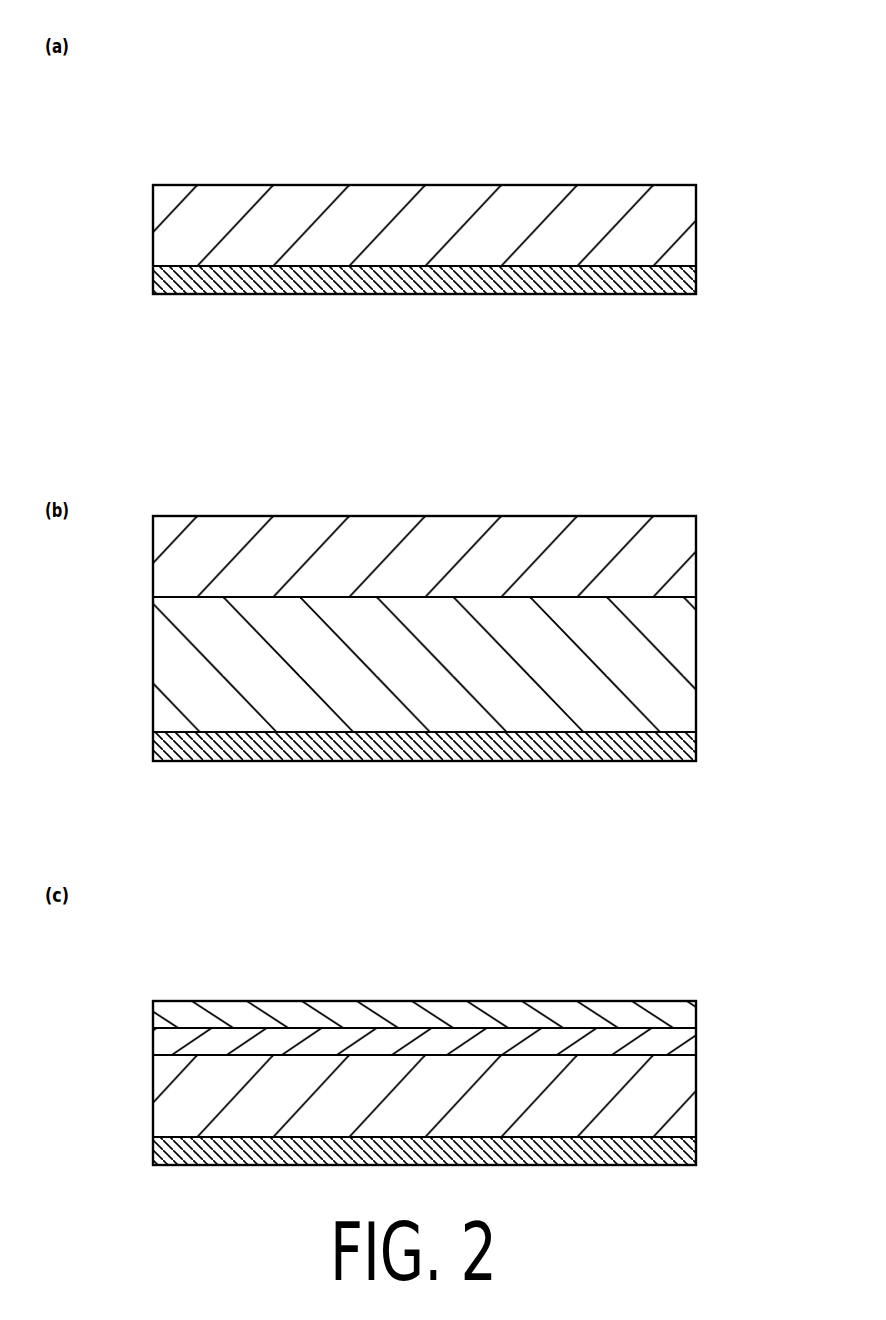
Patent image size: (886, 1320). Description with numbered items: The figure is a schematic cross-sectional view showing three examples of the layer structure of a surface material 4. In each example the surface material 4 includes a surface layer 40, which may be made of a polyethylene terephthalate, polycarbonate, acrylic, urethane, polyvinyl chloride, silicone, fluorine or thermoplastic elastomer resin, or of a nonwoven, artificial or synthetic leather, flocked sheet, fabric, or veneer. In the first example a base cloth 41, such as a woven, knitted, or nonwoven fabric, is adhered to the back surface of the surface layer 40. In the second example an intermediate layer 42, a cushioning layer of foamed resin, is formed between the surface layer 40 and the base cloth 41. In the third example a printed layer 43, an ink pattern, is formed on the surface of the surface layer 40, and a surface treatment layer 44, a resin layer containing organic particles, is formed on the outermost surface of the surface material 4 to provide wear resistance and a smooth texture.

The surface material 4 is at (504, 73).
The surface layer 40 is at (696, 216).
The base cloth 41 is at (696, 279).
The intermediate layer 42 is at (696, 663).
The printed layer 43 is at (696, 1041).
The surface treatment layer 44 is at (696, 1013).